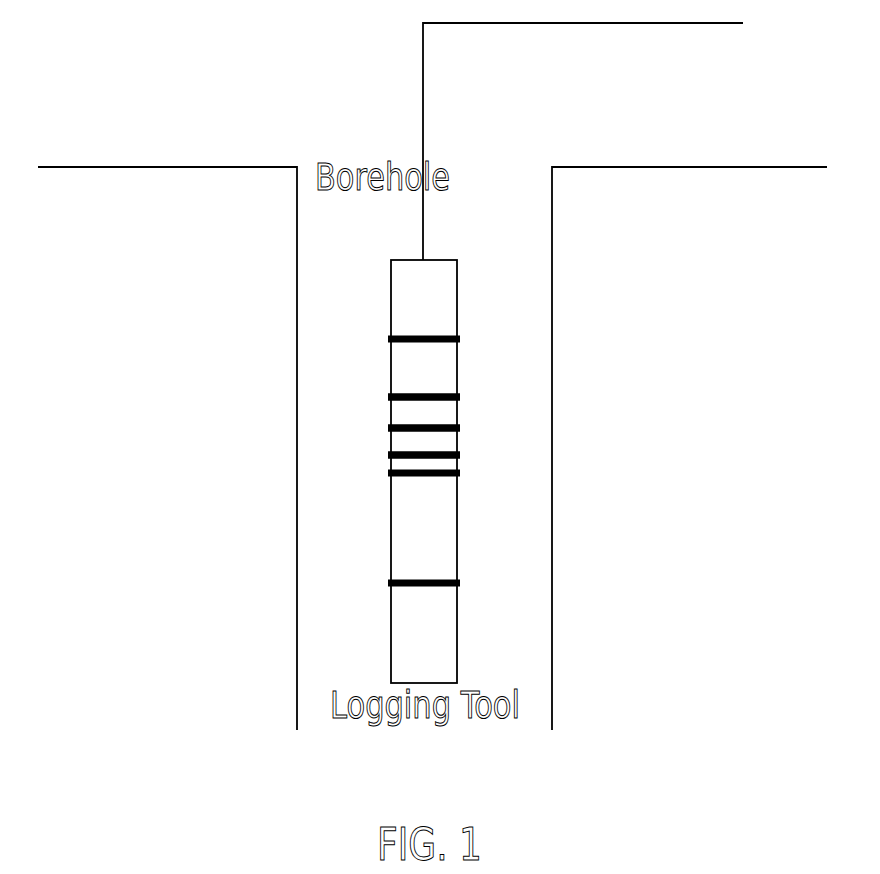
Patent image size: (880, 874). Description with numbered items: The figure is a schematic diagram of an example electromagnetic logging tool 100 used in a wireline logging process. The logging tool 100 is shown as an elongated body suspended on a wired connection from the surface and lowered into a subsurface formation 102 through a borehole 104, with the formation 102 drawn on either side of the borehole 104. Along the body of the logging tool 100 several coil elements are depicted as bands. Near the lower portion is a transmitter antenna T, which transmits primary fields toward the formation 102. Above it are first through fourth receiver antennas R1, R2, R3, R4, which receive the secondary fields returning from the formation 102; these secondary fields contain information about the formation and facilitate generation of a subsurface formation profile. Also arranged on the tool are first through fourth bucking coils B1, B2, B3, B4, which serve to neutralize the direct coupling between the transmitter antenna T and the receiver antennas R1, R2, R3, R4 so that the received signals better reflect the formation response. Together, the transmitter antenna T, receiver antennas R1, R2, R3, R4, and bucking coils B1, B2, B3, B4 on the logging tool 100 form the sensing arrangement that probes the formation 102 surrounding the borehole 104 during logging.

The EM logging tool 100 is at (428, 260).
The subsurface formation 102 is at (165, 165).
The borehole 104 is at (518, 573).
The first receiver antenna R1 is at (390, 341).
The second receiver antenna R2 is at (388, 397).
The third receiver antenna R3 is at (388, 428).
The fourth receiver antenna R4 is at (388, 455).
The first bucking coil B1 is at (460, 397).
The second bucking coil B2 is at (460, 428).
The third bucking coil B3 is at (460, 455).
The fourth bucking coil B4 is at (460, 473).
The transmitter antenna T is at (391, 581).